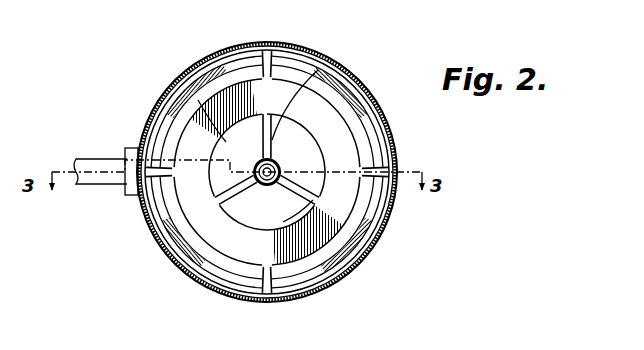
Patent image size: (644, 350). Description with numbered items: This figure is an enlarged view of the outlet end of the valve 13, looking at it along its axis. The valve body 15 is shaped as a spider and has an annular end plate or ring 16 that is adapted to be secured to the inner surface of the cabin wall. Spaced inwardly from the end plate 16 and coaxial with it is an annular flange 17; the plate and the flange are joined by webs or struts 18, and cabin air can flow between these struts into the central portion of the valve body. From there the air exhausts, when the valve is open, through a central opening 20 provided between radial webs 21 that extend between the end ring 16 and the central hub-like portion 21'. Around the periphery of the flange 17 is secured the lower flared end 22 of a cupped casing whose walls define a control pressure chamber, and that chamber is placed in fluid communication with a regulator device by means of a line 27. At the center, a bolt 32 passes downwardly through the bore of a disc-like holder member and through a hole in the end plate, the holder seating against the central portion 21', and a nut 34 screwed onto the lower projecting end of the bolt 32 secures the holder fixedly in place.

The valve 13 is at (180, 64).
The valve body 15 is at (166, 242).
The annular end plate 16 is at (293, 90).
The annular flange 17 is at (386, 212).
The webs 18 is at (262, 60).
The central opening 20 is at (348, 254).
The radial webs 21 is at (302, 129).
The central portion 21' is at (210, 157).
The lower flared end 22 is at (392, 130).
The line 27 is at (108, 185).
The bolt 32 is at (378, 152).
The nut 34 is at (257, 187).